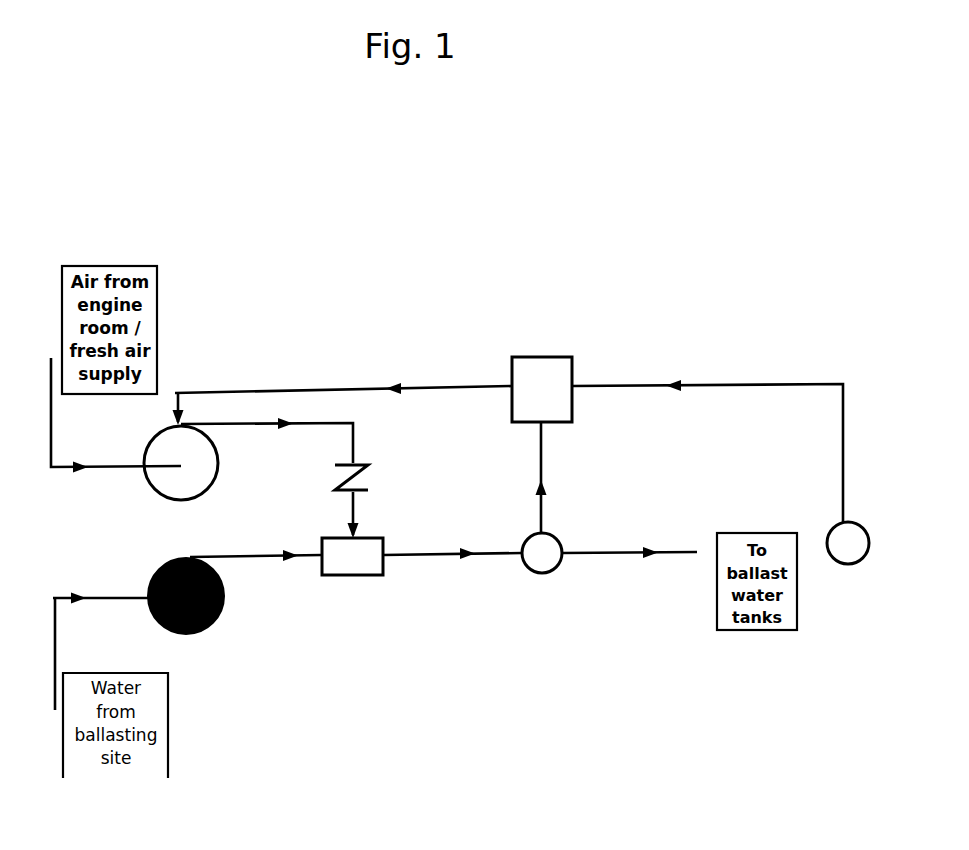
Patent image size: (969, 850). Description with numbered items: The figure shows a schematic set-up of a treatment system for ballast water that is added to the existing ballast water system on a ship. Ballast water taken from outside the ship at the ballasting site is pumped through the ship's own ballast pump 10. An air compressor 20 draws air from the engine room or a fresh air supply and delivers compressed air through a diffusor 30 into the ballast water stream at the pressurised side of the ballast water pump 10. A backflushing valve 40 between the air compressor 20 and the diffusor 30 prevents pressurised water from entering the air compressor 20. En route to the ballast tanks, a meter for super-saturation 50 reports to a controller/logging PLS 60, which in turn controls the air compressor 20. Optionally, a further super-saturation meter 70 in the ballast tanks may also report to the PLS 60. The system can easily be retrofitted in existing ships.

The ballast pump 10 is at (218, 622).
The air compressor 20 is at (207, 493).
The diffusor 30 is at (362, 580).
The air flow control valve 40 is at (378, 487).
The meter for super-saturation 50 is at (555, 572).
The controller 60 is at (566, 425).
The super-saturation meter 70 is at (862, 560).